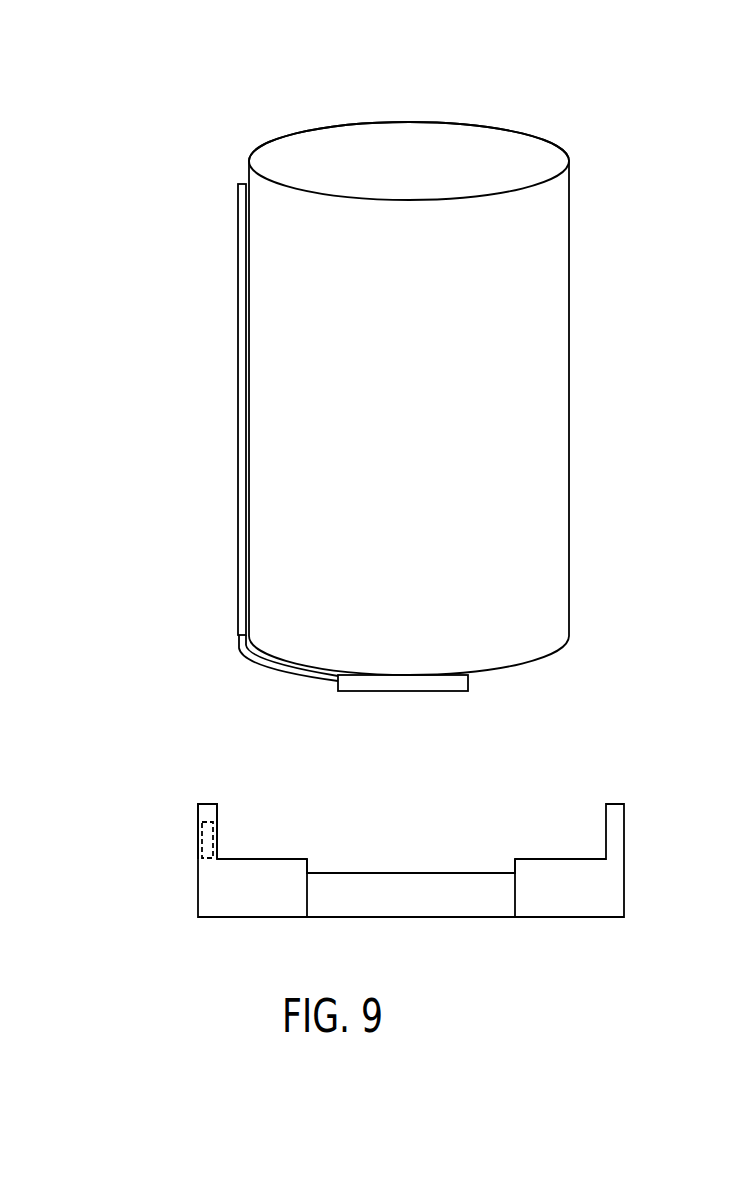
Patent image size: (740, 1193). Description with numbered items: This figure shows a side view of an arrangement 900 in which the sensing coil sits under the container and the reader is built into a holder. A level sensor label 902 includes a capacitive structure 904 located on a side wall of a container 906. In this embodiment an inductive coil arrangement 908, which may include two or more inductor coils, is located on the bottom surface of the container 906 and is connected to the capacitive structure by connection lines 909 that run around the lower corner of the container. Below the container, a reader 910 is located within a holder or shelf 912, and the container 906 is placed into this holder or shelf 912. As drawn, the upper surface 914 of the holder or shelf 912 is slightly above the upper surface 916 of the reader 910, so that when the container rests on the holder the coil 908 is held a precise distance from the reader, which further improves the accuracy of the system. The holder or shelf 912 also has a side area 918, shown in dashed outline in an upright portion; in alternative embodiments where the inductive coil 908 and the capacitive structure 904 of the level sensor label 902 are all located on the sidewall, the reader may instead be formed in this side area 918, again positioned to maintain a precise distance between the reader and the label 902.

The arrangement 900 is at (212, 77).
The level sensor label 902 is at (88, 352).
The capacitive structure 904 is at (240, 292).
The container 906 is at (350, 143).
The inductive coil arrangement 908 is at (427, 681).
The connection lines 909 is at (239, 653).
The reader 910 is at (358, 898).
The holder or shelf 912 is at (205, 812).
The upper surface of holder or shelf 914 is at (280, 858).
The upper surface of reader 916 is at (445, 872).
The side area of holder or shelf 918 is at (198, 840).